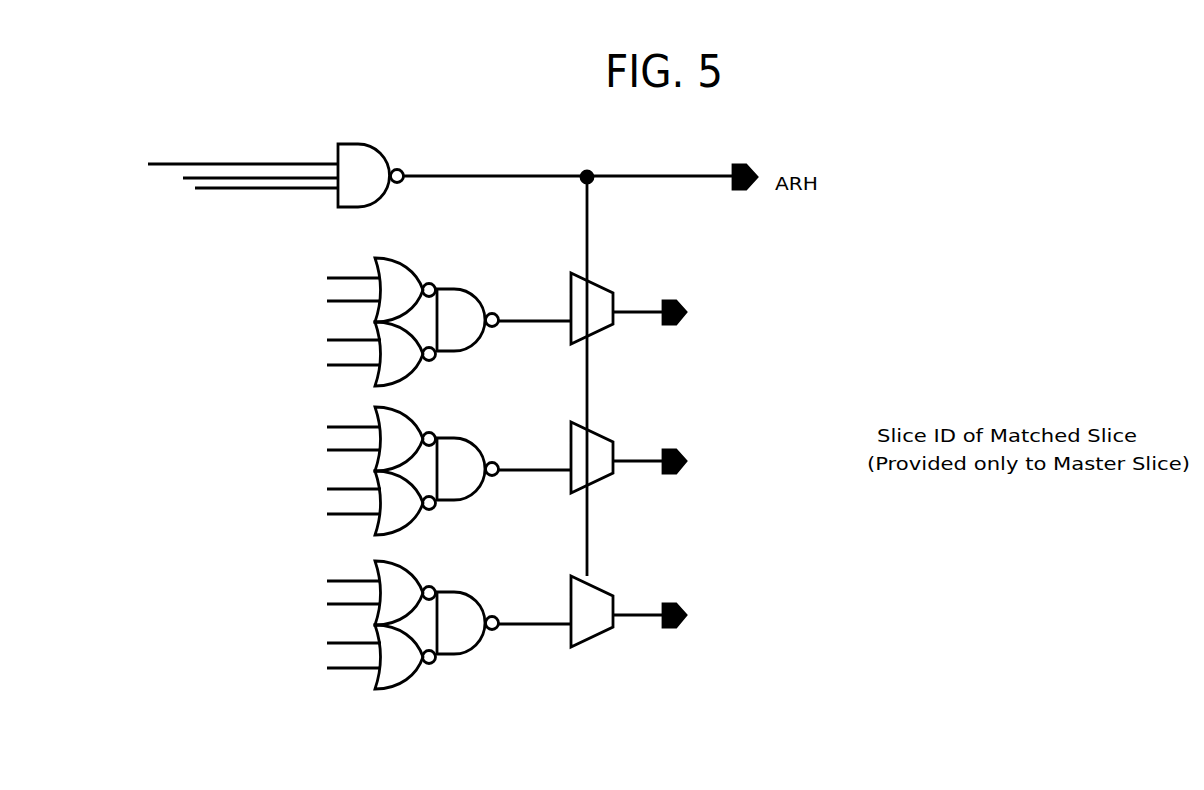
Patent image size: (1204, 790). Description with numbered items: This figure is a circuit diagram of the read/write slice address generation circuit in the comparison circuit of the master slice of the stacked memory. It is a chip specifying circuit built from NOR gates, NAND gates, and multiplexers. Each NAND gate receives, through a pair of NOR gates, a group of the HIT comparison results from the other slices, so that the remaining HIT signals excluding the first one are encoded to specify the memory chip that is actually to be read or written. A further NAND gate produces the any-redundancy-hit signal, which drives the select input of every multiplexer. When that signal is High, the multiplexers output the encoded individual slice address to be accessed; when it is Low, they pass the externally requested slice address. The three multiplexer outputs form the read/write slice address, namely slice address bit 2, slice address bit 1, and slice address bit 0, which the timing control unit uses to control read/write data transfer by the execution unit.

The selector channel for RWSA 0 (SA 0 select) 0 is at (571, 292).
The selector channel for RWSA 1 (SA 1 select) 1 is at (571, 447).
The selector channel for RWSA 2 (SA 2 select) 2 is at (571, 599).